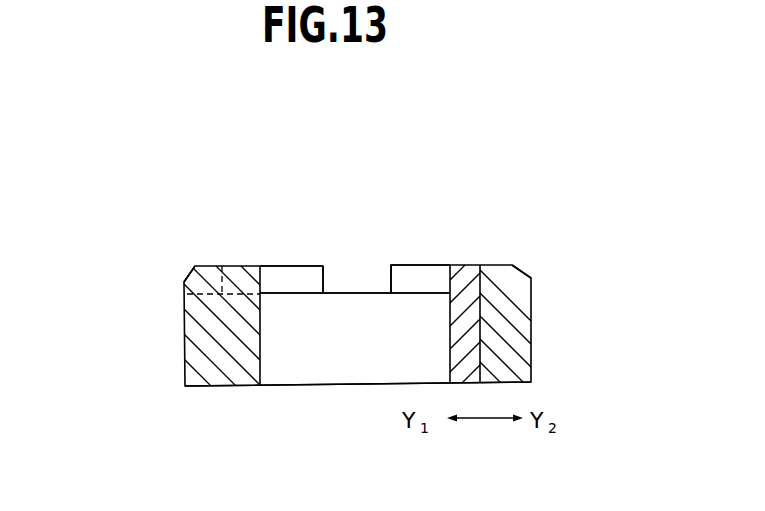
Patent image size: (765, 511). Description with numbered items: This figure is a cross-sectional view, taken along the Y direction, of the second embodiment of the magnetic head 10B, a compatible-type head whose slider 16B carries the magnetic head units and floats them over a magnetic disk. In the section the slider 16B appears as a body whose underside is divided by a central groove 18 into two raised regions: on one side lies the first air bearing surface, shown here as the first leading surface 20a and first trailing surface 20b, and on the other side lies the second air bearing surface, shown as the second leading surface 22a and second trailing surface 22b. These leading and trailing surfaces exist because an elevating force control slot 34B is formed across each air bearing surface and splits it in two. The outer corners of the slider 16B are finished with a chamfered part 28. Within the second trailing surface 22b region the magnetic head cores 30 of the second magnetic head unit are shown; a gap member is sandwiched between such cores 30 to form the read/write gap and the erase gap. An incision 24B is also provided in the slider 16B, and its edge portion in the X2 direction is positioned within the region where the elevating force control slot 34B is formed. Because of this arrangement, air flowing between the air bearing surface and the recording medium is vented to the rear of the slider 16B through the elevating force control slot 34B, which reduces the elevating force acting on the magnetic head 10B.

The magnetic head 10B is at (449, 138).
The slider 16B is at (367, 389).
The central groove 18 is at (358, 292).
The first leading edge bearing surface 20a is at (302, 265).
The first trailing edge bearing surface 20b is at (207, 267).
The second leading edge bearing surface 22a is at (405, 264).
The second trailing edge bearing surface 22b is at (487, 265).
The incision 24B is at (290, 373).
The chamfered part 28 is at (192, 269).
The magnetic head core 30 is at (457, 265).
The elevating force control slot 34B is at (273, 267).